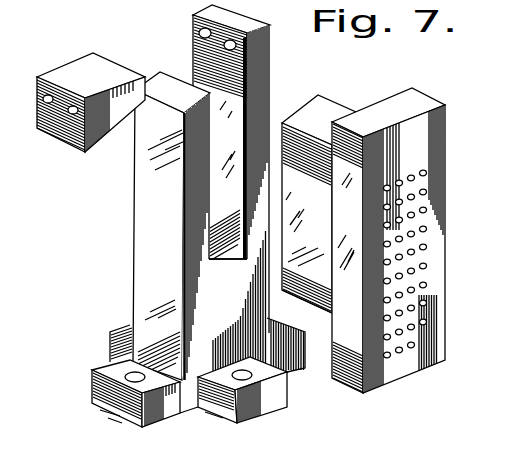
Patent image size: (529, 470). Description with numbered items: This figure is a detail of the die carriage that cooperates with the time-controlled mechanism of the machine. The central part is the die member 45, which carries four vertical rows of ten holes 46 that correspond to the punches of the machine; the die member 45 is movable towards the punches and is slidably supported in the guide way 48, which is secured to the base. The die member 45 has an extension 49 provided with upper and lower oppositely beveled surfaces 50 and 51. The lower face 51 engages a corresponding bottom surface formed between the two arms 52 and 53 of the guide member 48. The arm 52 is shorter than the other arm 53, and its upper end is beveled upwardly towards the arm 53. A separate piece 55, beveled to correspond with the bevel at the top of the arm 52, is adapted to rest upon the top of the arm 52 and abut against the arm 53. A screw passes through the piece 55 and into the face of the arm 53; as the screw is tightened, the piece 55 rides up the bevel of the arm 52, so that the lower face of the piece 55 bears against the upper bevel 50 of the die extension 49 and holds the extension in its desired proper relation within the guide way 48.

The die member 45 is at (413, 240).
The holes 46 is at (421, 321).
The guide way 48 is at (198, 329).
The extension 49 is at (306, 164).
The upper beveled surface 50 is at (319, 243).
The lower beveled surface 51 is at (316, 312).
The arm 52 is at (138, 213).
The arm 53 is at (197, 58).
The piece 55 is at (73, 72).